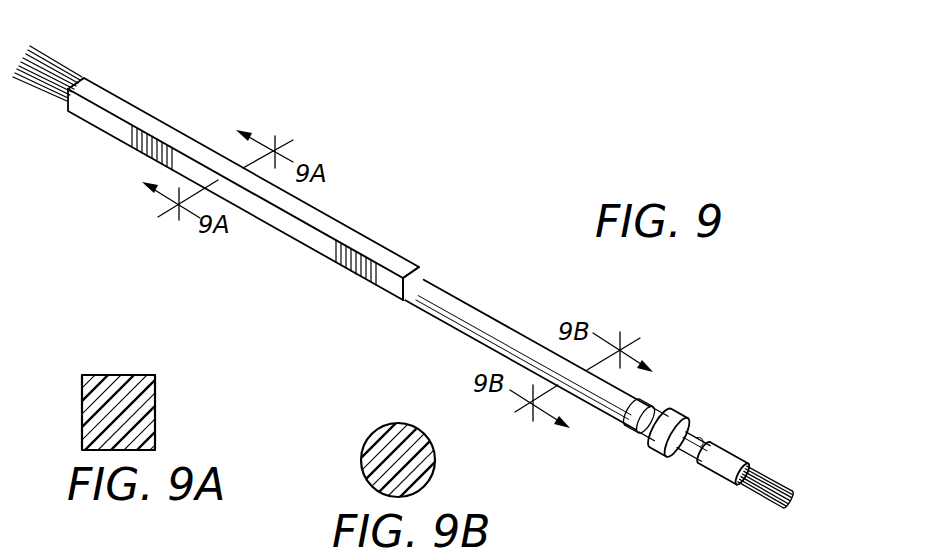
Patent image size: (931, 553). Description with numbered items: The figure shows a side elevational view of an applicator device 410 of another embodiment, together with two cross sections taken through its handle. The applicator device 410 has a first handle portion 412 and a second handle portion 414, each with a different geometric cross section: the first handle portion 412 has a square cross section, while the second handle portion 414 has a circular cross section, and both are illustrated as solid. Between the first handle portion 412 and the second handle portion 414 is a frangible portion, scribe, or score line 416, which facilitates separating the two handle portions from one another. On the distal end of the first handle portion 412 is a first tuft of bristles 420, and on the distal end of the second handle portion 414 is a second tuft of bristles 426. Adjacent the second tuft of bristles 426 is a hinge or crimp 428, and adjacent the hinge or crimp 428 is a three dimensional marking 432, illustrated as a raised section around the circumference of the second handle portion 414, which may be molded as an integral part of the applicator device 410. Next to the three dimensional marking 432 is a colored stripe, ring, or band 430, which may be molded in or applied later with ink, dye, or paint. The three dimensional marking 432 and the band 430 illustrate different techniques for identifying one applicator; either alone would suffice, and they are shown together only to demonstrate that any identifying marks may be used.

In FIG. 9, the applicator device 410 is at (403, 241).
In FIG. 9, the first handle portion 412 is at (333, 217).
In FIG. 9A, the first handle portion 412 is at (157, 413).
In FIG. 9, the second handle portion 414 is at (468, 313).
In FIG. 9B, the second handle portion 414 is at (372, 450).
In FIG. 9, the frangible portion, scribe, or score line 416 is at (430, 279).
In FIG. 9, the stranded conductor 420 is at (58, 68).
In FIG. 9, the second tuft of bristles 426 is at (770, 477).
In FIG. 9, the hinge or crimp 428 is at (690, 460).
In FIG. 9, the colored stripe, ring, or band 430 is at (635, 427).
In FIG. 9, the three dimensional marking 432 is at (678, 416).